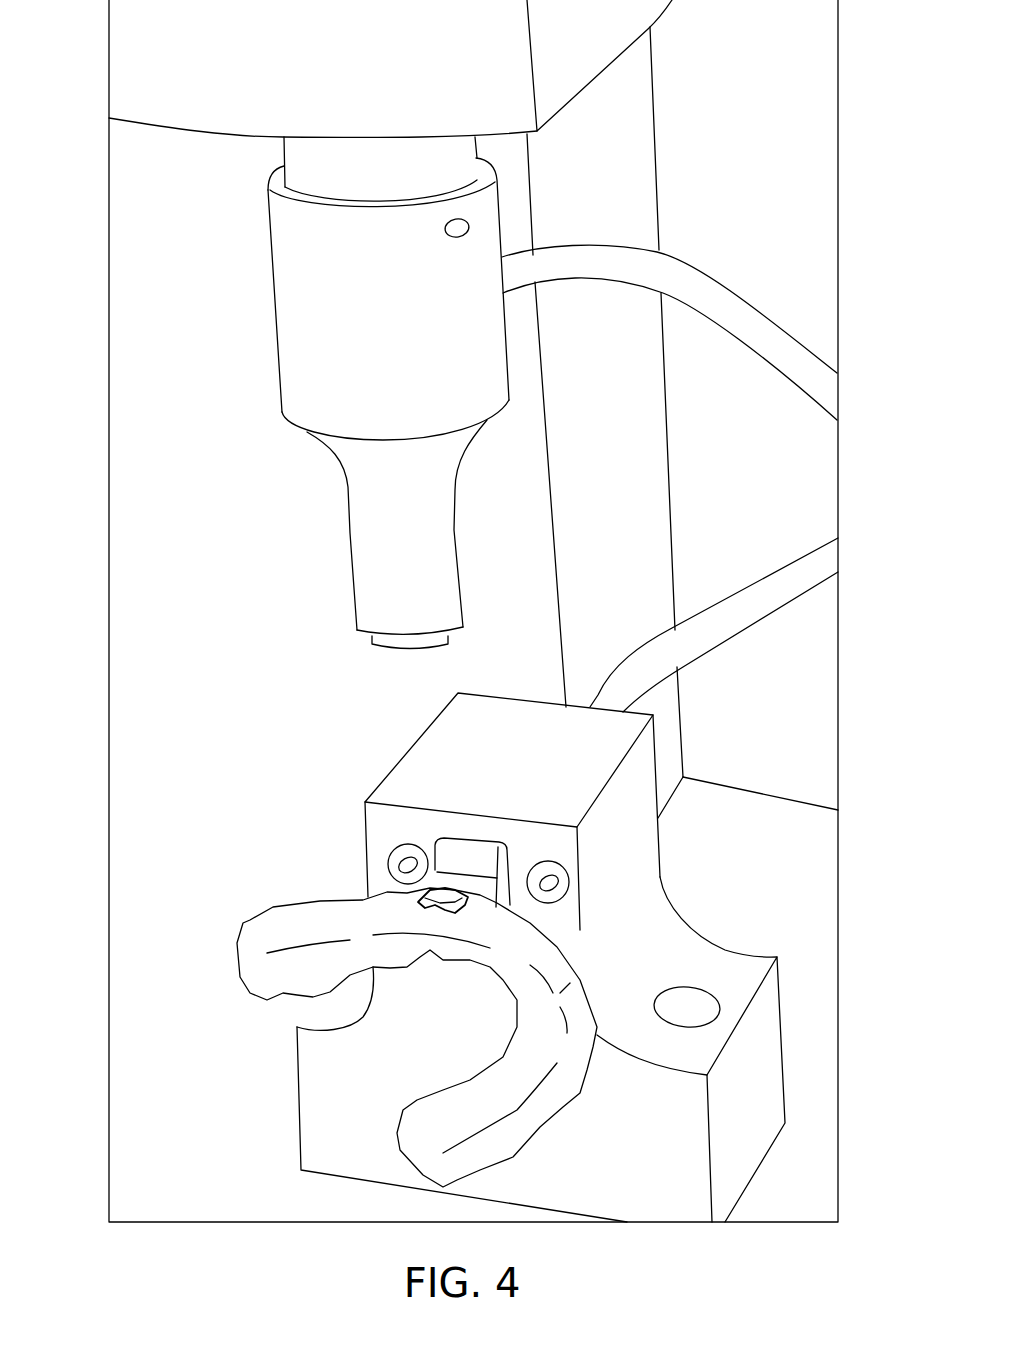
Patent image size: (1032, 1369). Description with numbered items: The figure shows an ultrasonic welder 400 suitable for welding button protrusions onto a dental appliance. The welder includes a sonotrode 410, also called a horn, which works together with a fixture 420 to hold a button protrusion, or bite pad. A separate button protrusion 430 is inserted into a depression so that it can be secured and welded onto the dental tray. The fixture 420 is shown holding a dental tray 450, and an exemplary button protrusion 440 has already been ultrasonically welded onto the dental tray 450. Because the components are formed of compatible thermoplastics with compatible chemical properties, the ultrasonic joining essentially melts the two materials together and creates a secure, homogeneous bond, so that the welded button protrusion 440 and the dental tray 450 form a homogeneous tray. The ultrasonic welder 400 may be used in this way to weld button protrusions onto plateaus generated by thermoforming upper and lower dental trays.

The ultrasonic welder 400 is at (817, 184).
The sonotrode 410 is at (350, 534).
The fixture 420 is at (480, 889).
The button protrusion 430 is at (405, 650).
The button protrusion 440 is at (430, 890).
The dental tray 450 is at (543, 1097).